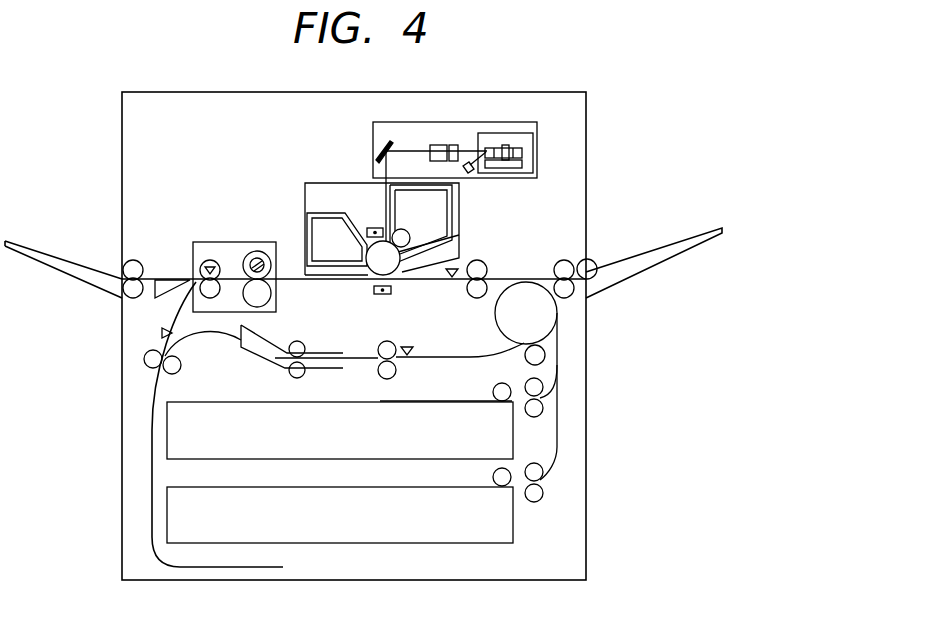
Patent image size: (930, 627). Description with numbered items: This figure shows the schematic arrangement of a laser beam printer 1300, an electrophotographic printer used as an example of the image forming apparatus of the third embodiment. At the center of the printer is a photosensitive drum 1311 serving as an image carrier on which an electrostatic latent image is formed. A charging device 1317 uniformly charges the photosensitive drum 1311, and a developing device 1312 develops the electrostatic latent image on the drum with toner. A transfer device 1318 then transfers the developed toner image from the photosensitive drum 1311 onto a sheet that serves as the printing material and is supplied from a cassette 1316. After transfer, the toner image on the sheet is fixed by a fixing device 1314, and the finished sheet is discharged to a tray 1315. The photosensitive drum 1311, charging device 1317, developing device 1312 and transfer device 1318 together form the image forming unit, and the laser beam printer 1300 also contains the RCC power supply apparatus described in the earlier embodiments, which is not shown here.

The laser beam printer 1300 is at (517, 92).
The photosensitive drum 1311 is at (400, 258).
The developing device 1312 is at (405, 232).
The fixing device 1314 is at (244, 242).
The tray 1315 is at (47, 258).
The cassette 1316 is at (502, 442).
The charging device 1317 is at (372, 228).
The transfer device 1318 is at (392, 290).